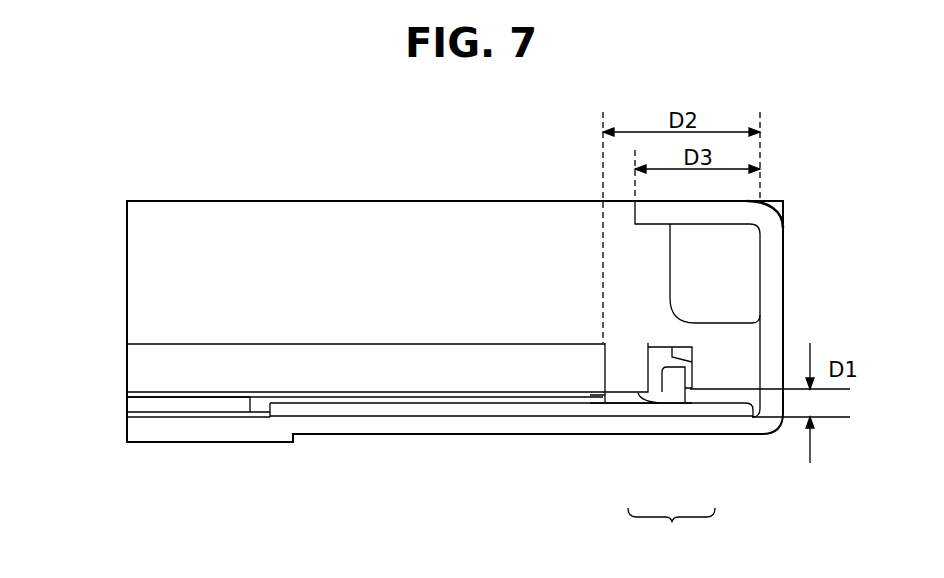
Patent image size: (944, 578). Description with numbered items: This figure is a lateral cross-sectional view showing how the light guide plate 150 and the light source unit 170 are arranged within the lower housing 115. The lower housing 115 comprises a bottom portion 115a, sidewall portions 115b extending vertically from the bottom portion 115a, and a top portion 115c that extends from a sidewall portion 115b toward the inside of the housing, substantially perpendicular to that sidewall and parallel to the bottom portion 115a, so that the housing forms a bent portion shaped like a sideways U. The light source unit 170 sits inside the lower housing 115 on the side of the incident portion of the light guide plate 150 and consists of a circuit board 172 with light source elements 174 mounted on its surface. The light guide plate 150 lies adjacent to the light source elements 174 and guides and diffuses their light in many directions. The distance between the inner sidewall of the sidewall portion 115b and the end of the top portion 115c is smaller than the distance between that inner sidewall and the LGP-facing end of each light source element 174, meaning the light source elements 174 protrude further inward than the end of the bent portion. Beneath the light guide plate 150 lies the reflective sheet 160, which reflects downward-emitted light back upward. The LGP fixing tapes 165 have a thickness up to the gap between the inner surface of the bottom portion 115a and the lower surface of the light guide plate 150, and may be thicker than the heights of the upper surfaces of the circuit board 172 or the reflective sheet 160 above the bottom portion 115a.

The lower housing 115 is at (767, 433).
The bottom portion 115a is at (352, 428).
The sidewall portions 115b is at (773, 298).
The top portion 115c is at (718, 208).
The light guide plate 150 is at (155, 368).
The reflective sheet 160 is at (192, 405).
The LGP fixing tapes 165 is at (442, 393).
The light source unit 170 is at (671, 529).
The circuit board 172 is at (710, 410).
The light source elements 174 is at (622, 377).